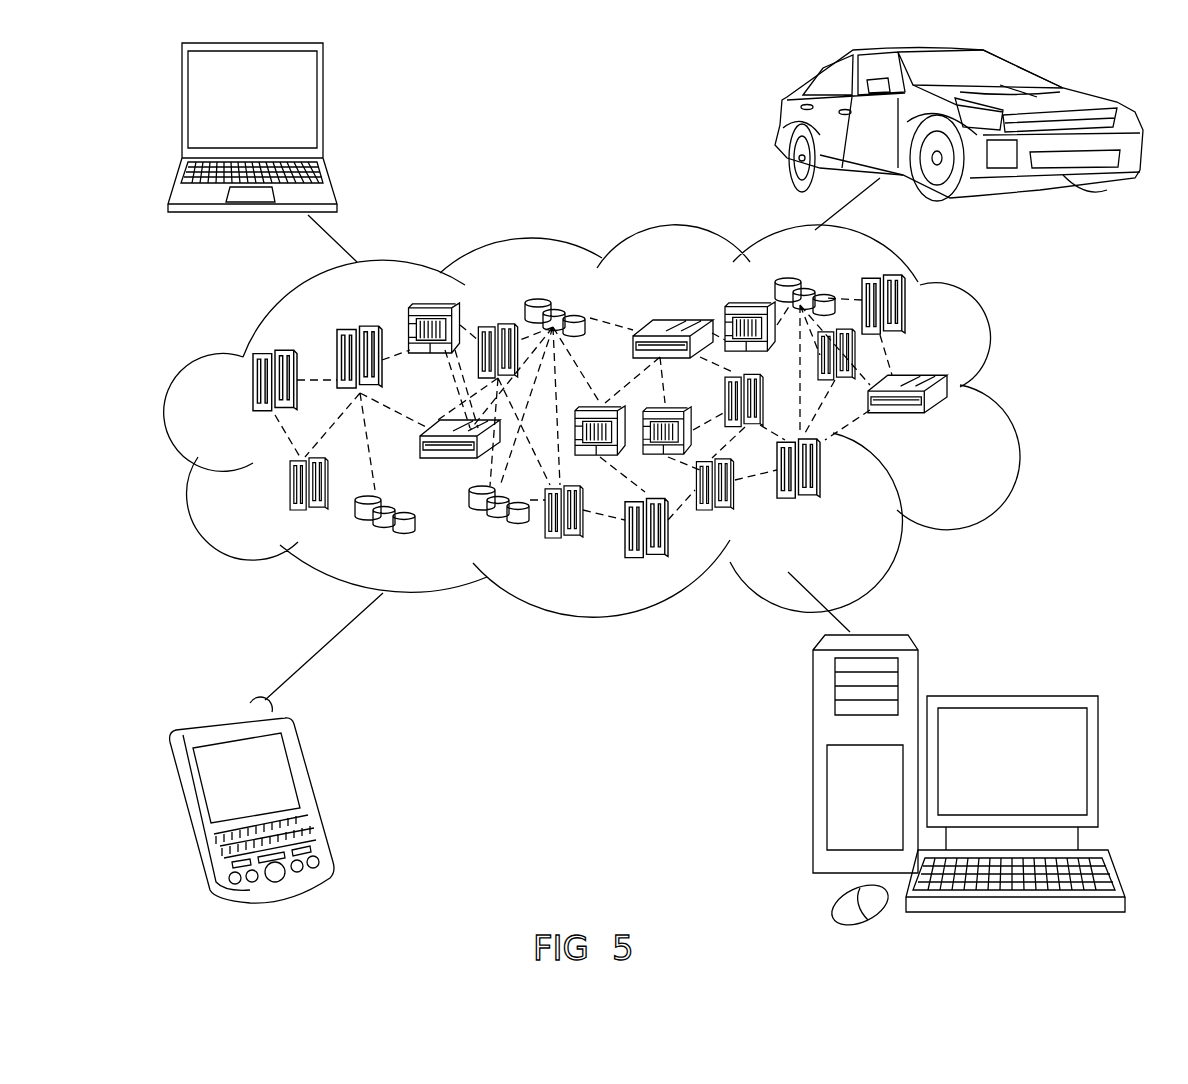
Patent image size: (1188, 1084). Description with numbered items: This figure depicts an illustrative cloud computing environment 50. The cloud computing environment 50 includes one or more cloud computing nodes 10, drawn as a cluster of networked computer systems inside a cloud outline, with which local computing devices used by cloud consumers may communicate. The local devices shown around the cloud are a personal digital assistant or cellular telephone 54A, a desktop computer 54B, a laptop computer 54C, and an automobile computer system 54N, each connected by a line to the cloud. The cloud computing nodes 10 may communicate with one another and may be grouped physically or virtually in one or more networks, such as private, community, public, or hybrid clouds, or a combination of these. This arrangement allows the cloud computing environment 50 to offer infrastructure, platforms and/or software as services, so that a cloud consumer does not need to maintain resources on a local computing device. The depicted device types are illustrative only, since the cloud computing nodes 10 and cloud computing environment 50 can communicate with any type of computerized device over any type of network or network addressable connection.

The cloud computing node 10 is at (948, 426).
The cloud computing environment 50 is at (1012, 393).
The personal digital assistant or cellular telephone 54A is at (312, 791).
The desktop computer 54B is at (1009, 696).
The laptop computer 54C is at (324, 108).
The automobile computer system 54N is at (780, 122).